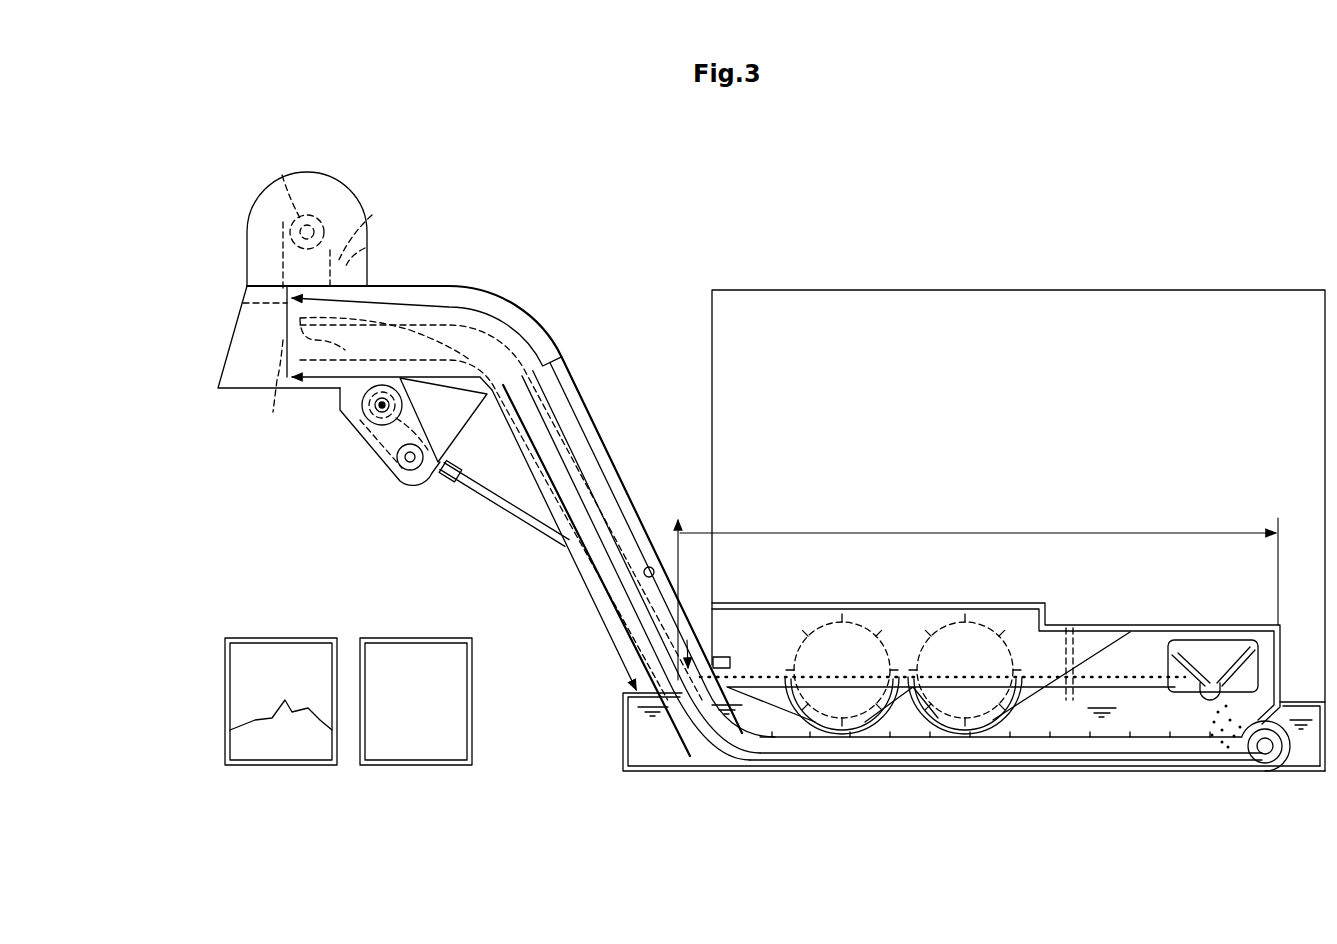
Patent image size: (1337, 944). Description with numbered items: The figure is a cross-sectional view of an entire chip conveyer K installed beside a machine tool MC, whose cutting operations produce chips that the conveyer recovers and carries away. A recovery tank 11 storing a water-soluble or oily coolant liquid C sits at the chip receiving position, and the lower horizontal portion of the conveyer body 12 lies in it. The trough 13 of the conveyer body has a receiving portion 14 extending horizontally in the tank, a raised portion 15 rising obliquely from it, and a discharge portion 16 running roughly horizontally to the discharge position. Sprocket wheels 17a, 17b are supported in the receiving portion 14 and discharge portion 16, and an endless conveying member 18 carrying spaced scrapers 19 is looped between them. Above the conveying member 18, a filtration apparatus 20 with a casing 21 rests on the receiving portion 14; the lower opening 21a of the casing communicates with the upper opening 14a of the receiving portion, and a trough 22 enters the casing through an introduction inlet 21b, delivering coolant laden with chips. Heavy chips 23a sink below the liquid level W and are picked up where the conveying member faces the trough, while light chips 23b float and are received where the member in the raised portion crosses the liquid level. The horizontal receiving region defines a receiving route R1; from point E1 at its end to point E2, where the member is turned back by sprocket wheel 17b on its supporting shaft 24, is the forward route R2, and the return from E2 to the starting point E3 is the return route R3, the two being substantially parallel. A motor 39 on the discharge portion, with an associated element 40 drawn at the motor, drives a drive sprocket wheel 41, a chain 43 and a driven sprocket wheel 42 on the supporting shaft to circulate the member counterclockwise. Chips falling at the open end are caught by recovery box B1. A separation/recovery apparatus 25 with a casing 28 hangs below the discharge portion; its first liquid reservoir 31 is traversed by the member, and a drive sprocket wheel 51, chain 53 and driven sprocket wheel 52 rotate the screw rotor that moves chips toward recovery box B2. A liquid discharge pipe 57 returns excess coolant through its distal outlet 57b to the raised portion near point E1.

The recovery tank 11 is at (963, 775).
The conveyer body 12 is at (582, 405).
The trough 13 is at (612, 458).
The receiving portion 14 is at (1087, 762).
The upper opening 14a is at (1248, 735).
The raised portion 15 is at (633, 510).
The discharge portion 16 is at (350, 284).
The sprocket wheel 17a is at (1266, 764).
The sprocket wheel 17b is at (243, 303).
The conveying member 18 is at (423, 328).
The scrapers 19 is at (1062, 715).
The filtration apparatus 20 is at (1088, 623).
The casing 21 is at (1163, 626).
The lower opening 21a is at (1244, 733).
The introduction inlet 21b is at (1222, 670).
The trough 22 is at (1246, 668).
The heavy chips 23a is at (1241, 724).
The light chips 23b is at (768, 670).
The supporting shaft 24 is at (340, 348).
The separation/recovery apparatus 25 is at (370, 463).
The casing 28 is at (394, 474).
The first liquid reservoir 31 is at (368, 441).
The motor 39 is at (348, 180).
The upper pulley 40 is at (284, 176).
The drive sprocket wheel 41 is at (371, 215).
The driven sprocket wheel 42 is at (273, 389).
The chain 43 is at (367, 249).
The drive sprocket wheel 51 is at (410, 378).
The driven sprocket wheel 52 is at (410, 470).
The chain 53 is at (420, 424).
The liquid discharge pipe 57 is at (446, 478).
The distal outlet 57b is at (654, 568).
The machine tool MC is at (1068, 290).
The chip conveyer K is at (852, 495).
The receiving route R1 is at (990, 533).
The forward route R2 is at (503, 330).
The return route R3 is at (582, 566).
The point E1 is at (670, 757).
The point E2 is at (290, 326).
The starting point E3 is at (628, 700).
The recovery box B1 is at (288, 768).
The recovery box B2 is at (474, 680).
The liquid level W is at (1015, 635).
The coolant liquid C is at (1145, 730).